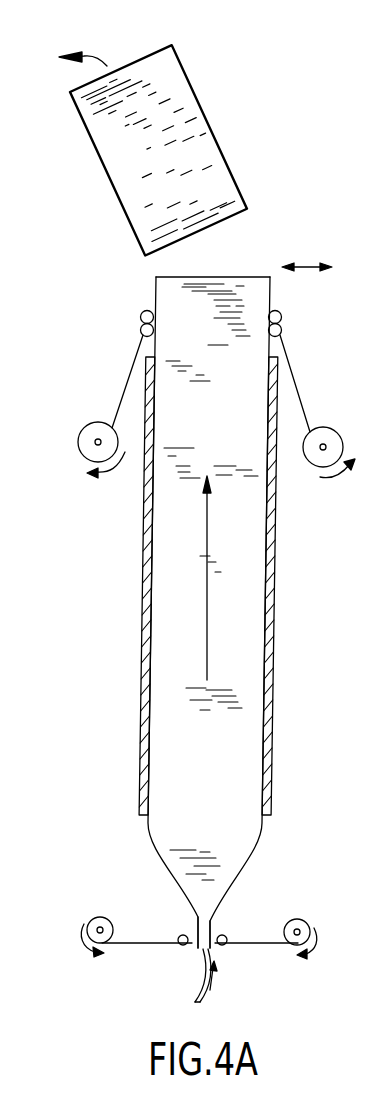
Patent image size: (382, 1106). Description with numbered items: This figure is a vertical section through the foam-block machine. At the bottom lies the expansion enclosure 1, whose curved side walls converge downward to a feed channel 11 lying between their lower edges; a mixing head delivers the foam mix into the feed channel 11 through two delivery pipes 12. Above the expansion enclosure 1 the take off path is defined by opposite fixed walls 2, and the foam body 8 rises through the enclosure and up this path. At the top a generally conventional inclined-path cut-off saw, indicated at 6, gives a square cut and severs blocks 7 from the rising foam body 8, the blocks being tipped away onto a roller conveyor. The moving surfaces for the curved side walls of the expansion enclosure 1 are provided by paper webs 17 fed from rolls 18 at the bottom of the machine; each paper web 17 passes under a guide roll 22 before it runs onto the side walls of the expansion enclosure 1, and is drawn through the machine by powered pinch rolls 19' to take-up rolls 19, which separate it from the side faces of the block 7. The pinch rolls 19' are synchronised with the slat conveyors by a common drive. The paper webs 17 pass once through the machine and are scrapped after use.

The expansion enclosure 1 is at (170, 852).
The fixed walls 2 is at (142, 690).
The cut-off saw 6 is at (303, 266).
The block 7 is at (238, 178).
The foam body 8 is at (227, 293).
The feed channel 11 is at (200, 951).
The delivery pipes 12 is at (195, 988).
The paper webs 17 is at (149, 943).
The rolls 18 is at (102, 917).
The take-up rolls 19 is at (216, 406).
The pinch rolls 19' is at (243, 329).
The guide roll 22 is at (227, 935).